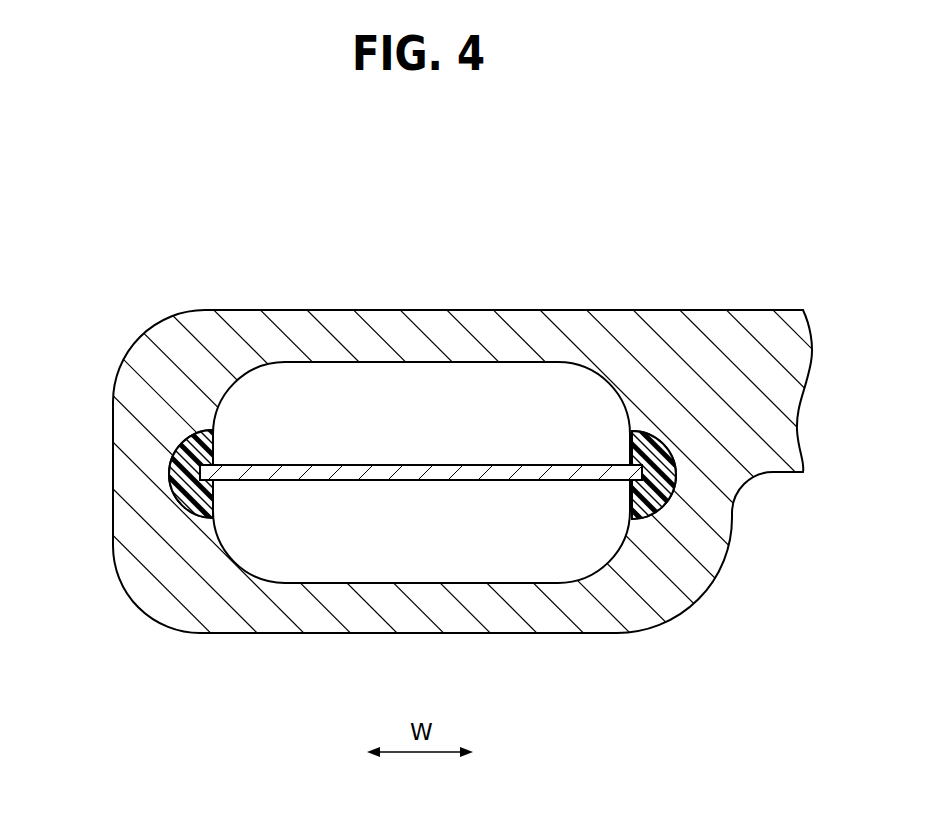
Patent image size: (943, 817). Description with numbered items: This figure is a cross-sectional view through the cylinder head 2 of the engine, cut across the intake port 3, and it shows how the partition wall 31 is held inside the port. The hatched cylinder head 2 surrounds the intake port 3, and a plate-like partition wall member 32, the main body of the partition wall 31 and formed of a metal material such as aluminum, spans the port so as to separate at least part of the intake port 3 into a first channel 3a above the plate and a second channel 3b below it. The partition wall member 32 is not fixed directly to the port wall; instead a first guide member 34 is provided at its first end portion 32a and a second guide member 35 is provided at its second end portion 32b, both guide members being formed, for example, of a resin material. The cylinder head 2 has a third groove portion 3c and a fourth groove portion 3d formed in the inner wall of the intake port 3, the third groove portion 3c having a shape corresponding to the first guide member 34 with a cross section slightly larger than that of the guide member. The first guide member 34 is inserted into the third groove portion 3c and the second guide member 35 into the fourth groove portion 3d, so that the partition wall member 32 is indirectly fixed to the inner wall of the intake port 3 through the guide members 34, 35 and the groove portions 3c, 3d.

The cylinder head 2 is at (708, 311).
The intake port 3 is at (414, 354).
The first channel 3a is at (473, 378).
The second channel 3b is at (420, 562).
The third groove portion 3c is at (172, 446).
The fourth groove portion 3d is at (646, 516).
The partition wall 31 is at (281, 456).
The partition wall member 32 is at (336, 472).
The first end portion 32a is at (178, 477).
The second end portion 32b is at (676, 488).
The first guide member 34 is at (180, 493).
The second guide member 35 is at (668, 507).